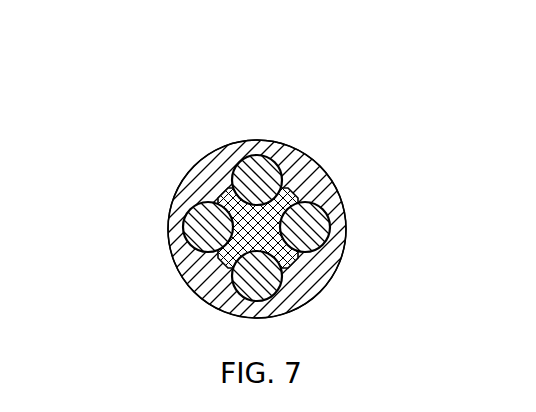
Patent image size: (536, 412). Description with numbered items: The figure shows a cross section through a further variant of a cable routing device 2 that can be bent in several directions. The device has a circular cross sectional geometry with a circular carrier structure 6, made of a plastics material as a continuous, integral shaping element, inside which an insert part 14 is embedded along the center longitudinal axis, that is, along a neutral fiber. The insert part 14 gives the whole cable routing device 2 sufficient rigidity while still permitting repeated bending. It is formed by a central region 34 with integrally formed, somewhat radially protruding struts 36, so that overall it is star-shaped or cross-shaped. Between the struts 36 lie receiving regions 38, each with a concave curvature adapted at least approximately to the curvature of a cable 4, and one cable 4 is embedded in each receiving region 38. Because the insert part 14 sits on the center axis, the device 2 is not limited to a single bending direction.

The cable routing device 2 is at (320, 97).
The cable 4 is at (250, 173).
The carrier structure 6 is at (199, 181).
The insert part 14 is at (270, 247).
The central region 34 is at (260, 237).
The struts 36 is at (242, 258).
The receiving region 38 is at (255, 202).